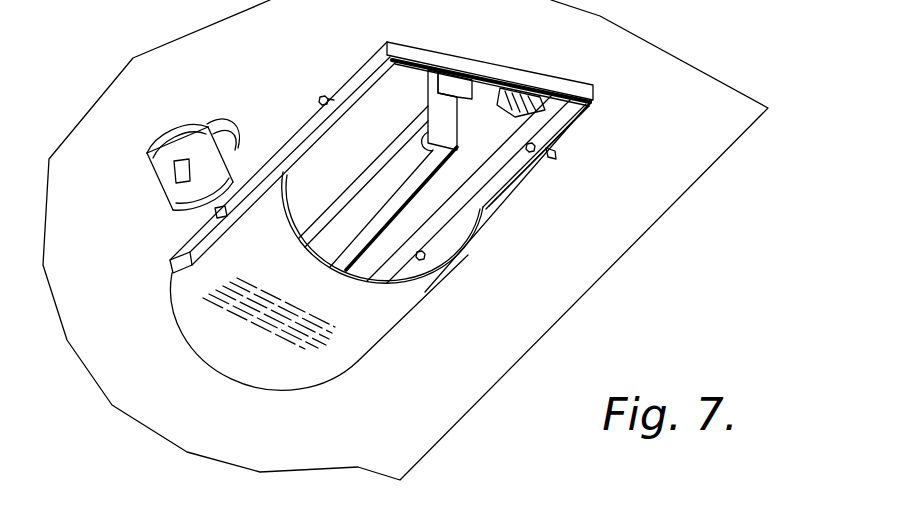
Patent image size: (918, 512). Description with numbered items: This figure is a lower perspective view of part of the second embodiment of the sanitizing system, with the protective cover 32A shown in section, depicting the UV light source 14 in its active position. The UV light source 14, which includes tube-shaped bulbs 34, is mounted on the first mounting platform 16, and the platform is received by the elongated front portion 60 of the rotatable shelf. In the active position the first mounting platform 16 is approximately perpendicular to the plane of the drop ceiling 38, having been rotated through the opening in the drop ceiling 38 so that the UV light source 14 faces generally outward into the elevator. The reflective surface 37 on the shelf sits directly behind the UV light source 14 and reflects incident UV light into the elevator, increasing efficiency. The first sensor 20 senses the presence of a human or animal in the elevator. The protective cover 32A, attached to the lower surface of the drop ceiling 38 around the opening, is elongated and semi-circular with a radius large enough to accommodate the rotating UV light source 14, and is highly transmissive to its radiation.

The UV light source 14 is at (288, 231).
The first mounting platform 16 is at (433, 84).
The first sensor 20 is at (160, 164).
The protective cover 32A is at (233, 357).
The tube-shaped bulbs 34 is at (337, 243).
The reflective surface 37 is at (364, 251).
The drop ceiling 38 is at (689, 77).
The front portion 60 is at (458, 82).